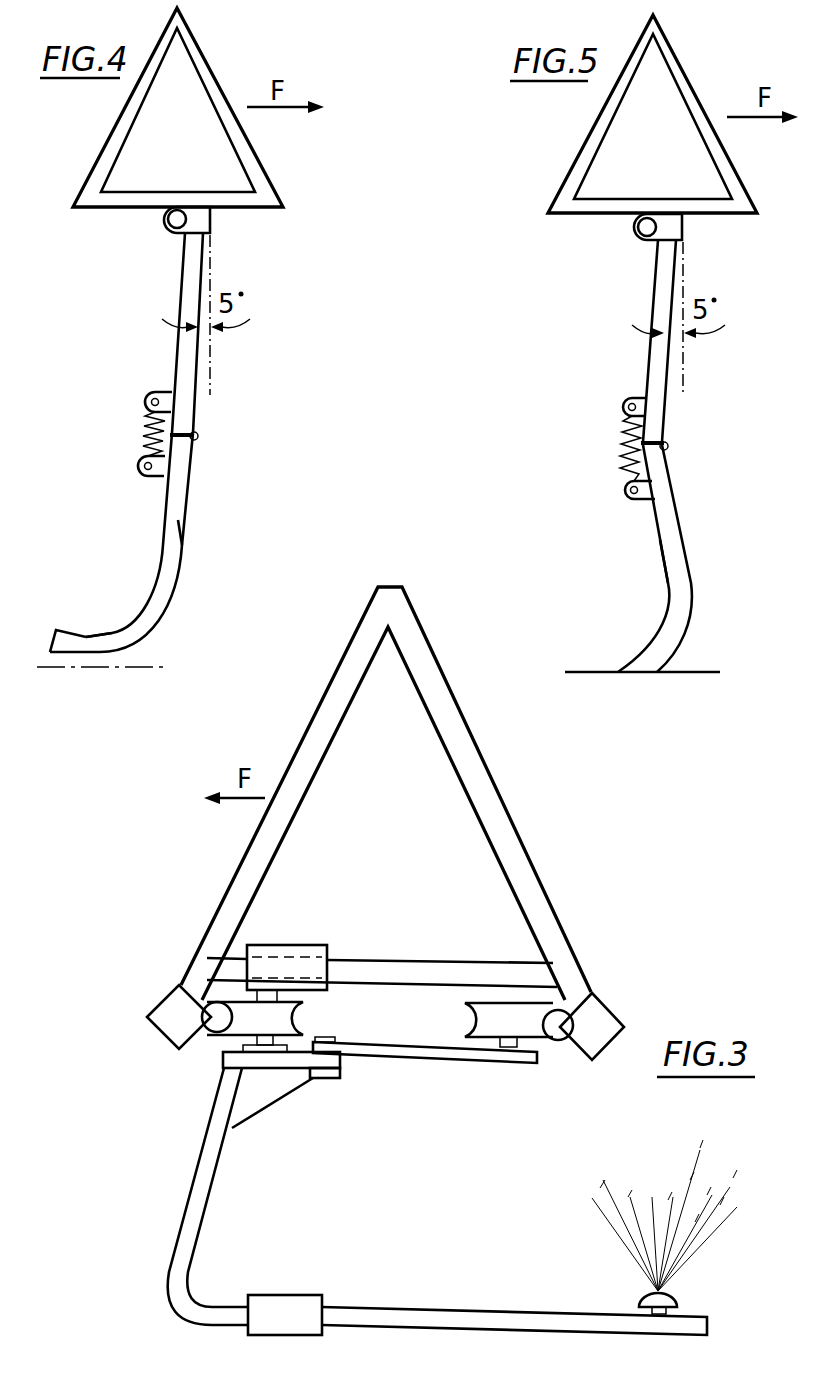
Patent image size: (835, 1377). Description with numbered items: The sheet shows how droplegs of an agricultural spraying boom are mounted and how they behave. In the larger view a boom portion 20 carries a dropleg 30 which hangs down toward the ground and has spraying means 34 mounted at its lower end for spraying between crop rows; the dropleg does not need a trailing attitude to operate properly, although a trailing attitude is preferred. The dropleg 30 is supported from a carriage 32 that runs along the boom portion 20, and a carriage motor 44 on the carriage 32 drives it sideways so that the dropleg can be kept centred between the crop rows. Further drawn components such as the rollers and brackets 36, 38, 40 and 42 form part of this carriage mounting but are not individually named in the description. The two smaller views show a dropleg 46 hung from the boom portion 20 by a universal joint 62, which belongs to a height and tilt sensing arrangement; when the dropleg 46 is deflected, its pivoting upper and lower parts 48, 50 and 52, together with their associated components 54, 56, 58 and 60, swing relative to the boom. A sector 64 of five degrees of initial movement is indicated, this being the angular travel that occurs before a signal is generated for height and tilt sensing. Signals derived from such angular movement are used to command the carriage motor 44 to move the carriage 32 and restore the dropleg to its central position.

In FIG. 4, the boom portion 20 is at (258, 137).
In FIG. 5, the boom portion 20 is at (740, 148).
In FIG. 3, the boom portion 20 is at (240, 873).
In FIG. 3, the dropleg 30 is at (222, 1180).
In FIG. 3, the carriage 32 is at (368, 1074).
In FIG. 3, the spraying means 34 is at (640, 1307).
In FIG. 3, the left roller 36 is at (213, 1025).
In FIG. 3, the right roller 38 is at (558, 1030).
In FIG. 3, the left roller bracket 40 is at (292, 1017).
In FIG. 3, the right roller bracket 42 is at (472, 1020).
In FIG. 3, the carriage motor 44 is at (325, 945).
In FIG. 4, the dropleg 46 is at (156, 442).
In FIG. 5, the dropleg 46 is at (659, 456).
In FIG. 4, the upper arm 48 is at (183, 370).
In FIG. 5, the upper arm 48 is at (658, 372).
In FIG. 4, the lower arm 50 is at (142, 542).
In FIG. 5, the lower arm 50 is at (690, 558).
In FIG. 4, the lower arm straight portion 52 is at (178, 502).
In FIG. 5, the lower arm straight portion 52 is at (668, 512).
In FIG. 4, the arm end portion 54 is at (123, 636).
In FIG. 4, the end pad 56 is at (50, 640).
In FIG. 4, the pivot pin 58 is at (208, 427).
In FIG. 5, the pivot pin 58 is at (679, 434).
In FIG. 4, the spring 60 is at (143, 435).
In FIG. 5, the spring 60 is at (632, 452).
In FIG. 4, the universal joint 62 is at (158, 242).
In FIG. 5, the universal joint 62 is at (628, 249).
In FIG. 4, the sector of initial movement 64 is at (220, 271).
In FIG. 5, the sector of initial movement 64 is at (692, 279).